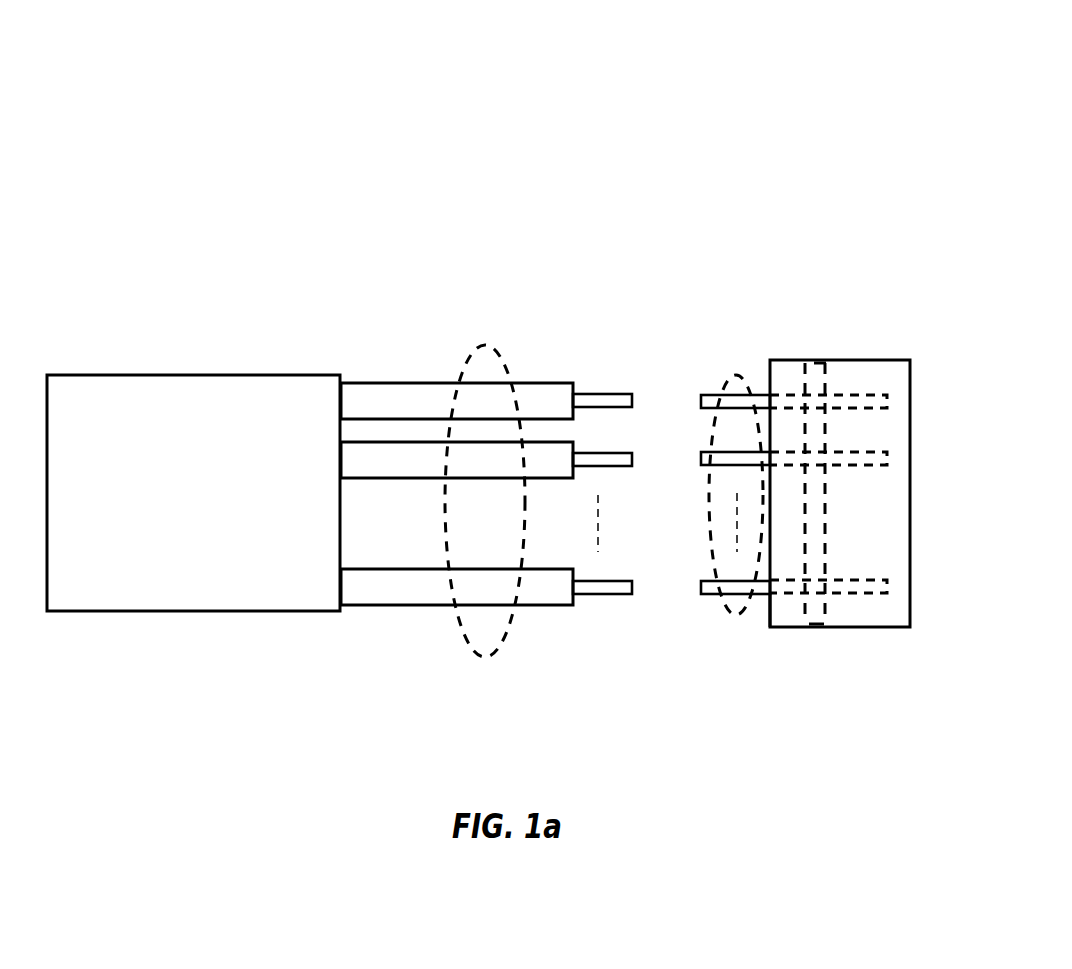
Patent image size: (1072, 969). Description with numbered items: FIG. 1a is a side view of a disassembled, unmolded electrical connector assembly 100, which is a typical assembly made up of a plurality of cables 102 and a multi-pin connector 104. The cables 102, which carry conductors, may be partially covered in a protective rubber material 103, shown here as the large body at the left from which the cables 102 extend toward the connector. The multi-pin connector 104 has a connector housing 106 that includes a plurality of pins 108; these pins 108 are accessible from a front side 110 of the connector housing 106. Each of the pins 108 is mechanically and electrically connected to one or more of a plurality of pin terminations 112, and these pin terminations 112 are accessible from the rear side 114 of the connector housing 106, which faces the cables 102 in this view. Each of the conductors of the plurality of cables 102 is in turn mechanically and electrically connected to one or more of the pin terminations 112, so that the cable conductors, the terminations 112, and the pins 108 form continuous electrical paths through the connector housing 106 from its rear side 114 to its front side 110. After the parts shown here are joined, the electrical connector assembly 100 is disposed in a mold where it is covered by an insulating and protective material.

The electrical connector assembly 100 is at (622, 140).
The cables 102 is at (477, 353).
The protective rubber material 103 is at (222, 374).
The multi-pin connector 104 is at (867, 325).
The connector housing 106 is at (911, 550).
The pins 108 is at (860, 596).
The front side 110 is at (911, 398).
The pin terminations 112 is at (735, 378).
The rear side 114 is at (767, 617).